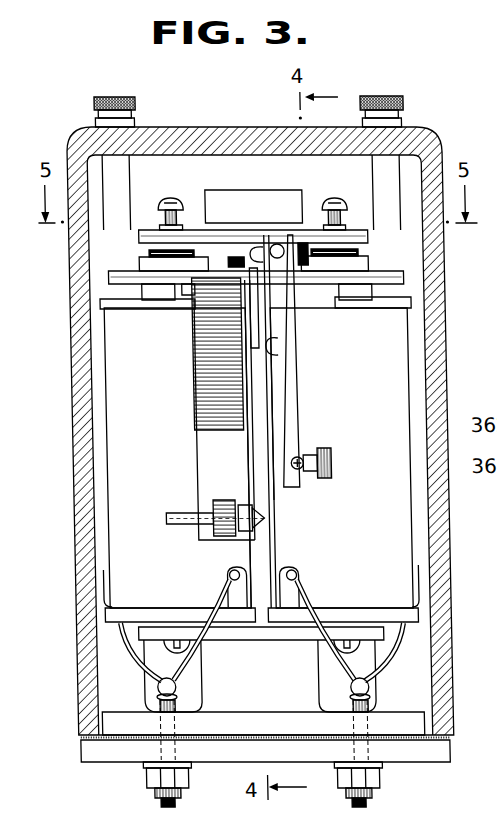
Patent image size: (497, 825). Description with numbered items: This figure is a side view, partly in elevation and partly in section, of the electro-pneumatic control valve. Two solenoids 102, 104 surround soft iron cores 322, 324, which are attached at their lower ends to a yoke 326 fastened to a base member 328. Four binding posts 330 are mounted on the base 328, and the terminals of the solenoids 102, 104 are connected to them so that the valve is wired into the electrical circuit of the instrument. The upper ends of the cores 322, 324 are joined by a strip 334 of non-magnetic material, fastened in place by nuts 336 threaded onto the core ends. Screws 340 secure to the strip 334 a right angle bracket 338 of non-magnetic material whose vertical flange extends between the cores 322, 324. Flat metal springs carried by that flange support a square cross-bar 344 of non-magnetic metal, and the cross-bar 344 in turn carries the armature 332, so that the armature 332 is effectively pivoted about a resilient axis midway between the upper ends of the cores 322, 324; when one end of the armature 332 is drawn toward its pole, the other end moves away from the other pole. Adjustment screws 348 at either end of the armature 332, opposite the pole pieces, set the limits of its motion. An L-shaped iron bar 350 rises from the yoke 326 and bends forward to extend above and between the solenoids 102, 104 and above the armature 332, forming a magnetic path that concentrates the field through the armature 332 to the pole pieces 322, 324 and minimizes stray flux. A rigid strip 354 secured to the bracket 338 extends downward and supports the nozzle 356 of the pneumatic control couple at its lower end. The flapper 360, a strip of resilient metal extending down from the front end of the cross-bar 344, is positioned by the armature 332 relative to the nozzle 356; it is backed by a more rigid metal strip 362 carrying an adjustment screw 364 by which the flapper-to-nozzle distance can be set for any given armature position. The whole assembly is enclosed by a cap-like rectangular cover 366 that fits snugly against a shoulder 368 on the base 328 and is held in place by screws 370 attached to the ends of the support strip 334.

The solenoid 102 is at (113, 402).
The solenoid 104 is at (394, 377).
The soft iron core 322 is at (150, 255).
The soft iron core 324 is at (355, 252).
The yoke 326 is at (255, 640).
The base member 328 is at (222, 722).
The binding posts 330 is at (360, 700).
The armature 332 is at (198, 230).
The strip 334 is at (388, 277).
The nuts 336 is at (145, 296).
The right angle bracket 338 is at (238, 370).
The screws 340 is at (226, 256).
The square cross-bar 344 is at (273, 245).
The adjustment screws 348 is at (163, 203).
The L-shaped iron bar 350 is at (255, 190).
The rigid strip 354 is at (243, 435).
The nozzle 356 is at (265, 523).
The flapper 360 is at (277, 497).
The rigid metal strip 362 is at (294, 375).
The adjustment screw 364 is at (323, 451).
The cover 366 is at (245, 138).
The shoulder 368 is at (419, 743).
The screws 370 is at (97, 103).